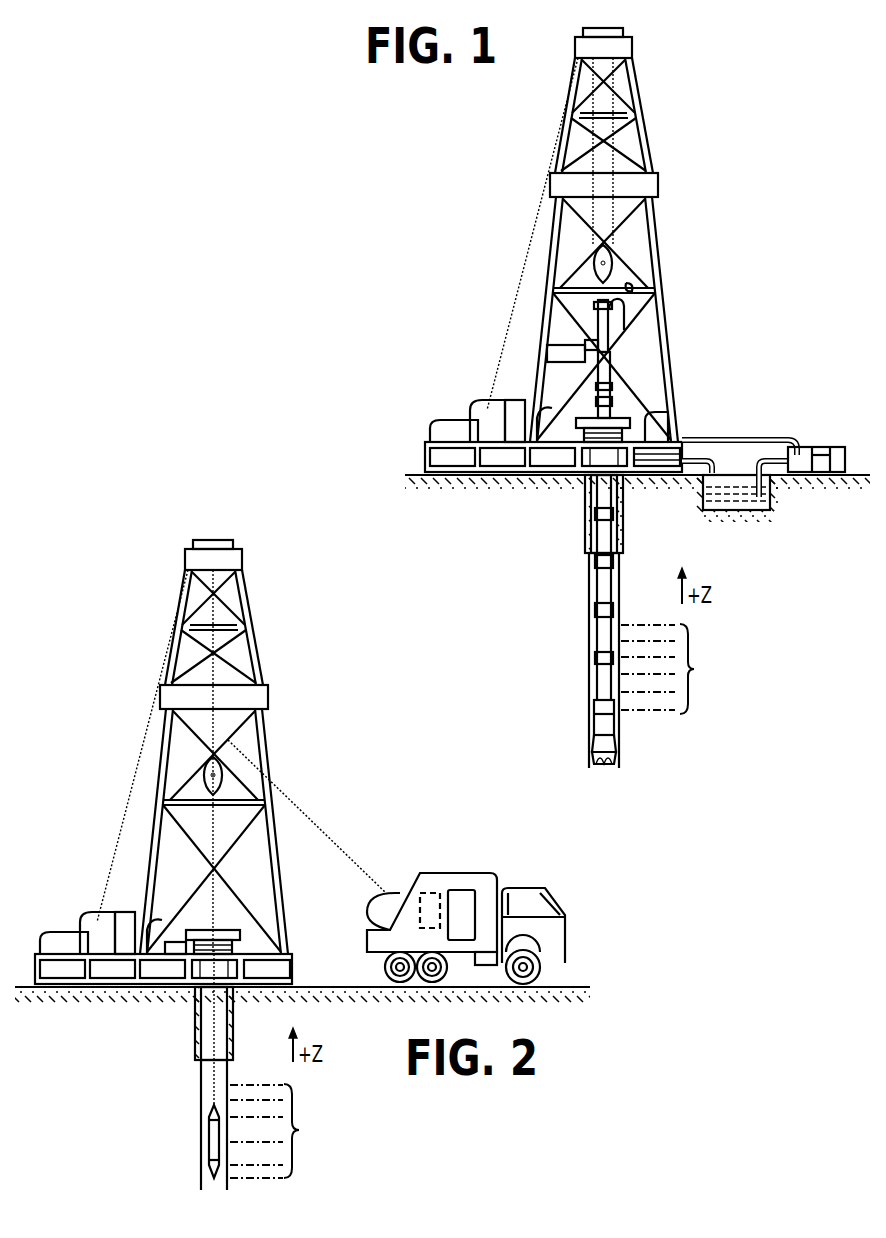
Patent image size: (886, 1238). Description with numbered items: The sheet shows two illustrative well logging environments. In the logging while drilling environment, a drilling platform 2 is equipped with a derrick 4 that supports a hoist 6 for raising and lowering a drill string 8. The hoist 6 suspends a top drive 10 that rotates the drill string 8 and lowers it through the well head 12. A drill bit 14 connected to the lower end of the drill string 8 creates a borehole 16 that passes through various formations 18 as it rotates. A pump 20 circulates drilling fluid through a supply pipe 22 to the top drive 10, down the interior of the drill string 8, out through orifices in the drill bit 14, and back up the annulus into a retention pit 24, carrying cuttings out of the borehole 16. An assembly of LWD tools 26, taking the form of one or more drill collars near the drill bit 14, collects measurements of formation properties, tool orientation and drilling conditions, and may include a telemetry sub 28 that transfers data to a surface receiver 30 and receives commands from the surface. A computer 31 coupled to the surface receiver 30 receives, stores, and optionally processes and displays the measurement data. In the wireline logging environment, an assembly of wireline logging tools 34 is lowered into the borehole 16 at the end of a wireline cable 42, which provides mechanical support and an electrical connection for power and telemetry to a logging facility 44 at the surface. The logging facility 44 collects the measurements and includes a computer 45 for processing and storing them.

In FIG. 1, the drilling platform 2 is at (425, 450).
In FIG. 2, the drilling platform 2 is at (179, 955).
In FIG. 1, the derrick 4 is at (641, 136).
In FIG. 2, the derrick 4 is at (203, 747).
In FIG. 1, the hoist 6 is at (622, 262).
In FIG. 2, the hoist 6 is at (251, 761).
In FIG. 1, the drill string 8 is at (610, 594).
In FIG. 1, the top drive 10 is at (604, 326).
In FIG. 1, the well head 12 is at (620, 420).
In FIG. 2, the well head 12 is at (243, 910).
In FIG. 1, the drill bit 14 is at (612, 756).
In FIG. 1, the borehole 16 is at (620, 598).
In FIG. 2, the borehole 16 is at (229, 1188).
In FIG. 1, the formations 18 is at (668, 669).
In FIG. 2, the formations 18 is at (279, 1131).
In FIG. 1, the pump 20 is at (800, 451).
In FIG. 1, the supply pipe 22 is at (748, 434).
In FIG. 1, the retention pit 24 is at (716, 498).
In FIG. 1, the assembly of LWD tools 26 is at (598, 734).
In FIG. 1, the telemetry sub 28 is at (596, 714).
In FIG. 1, the surface receiver 30 is at (605, 378).
In FIG. 1, the computer 31 is at (490, 410).
In FIG. 2, the assembly of wireline logging tools 34 is at (210, 1134).
In FIG. 2, the wireline cable 42 is at (280, 798).
In FIG. 2, the logging facility 44 is at (490, 873).
In FIG. 2, the computer 45 is at (424, 893).